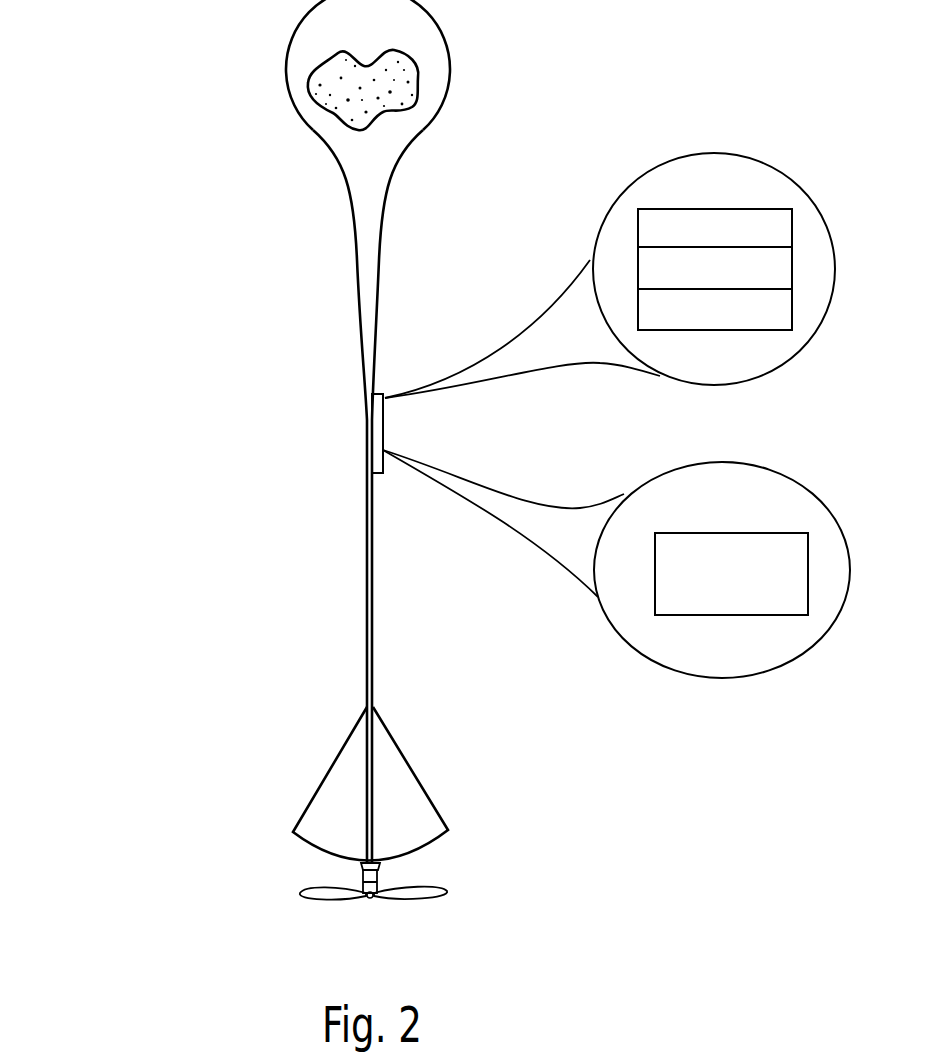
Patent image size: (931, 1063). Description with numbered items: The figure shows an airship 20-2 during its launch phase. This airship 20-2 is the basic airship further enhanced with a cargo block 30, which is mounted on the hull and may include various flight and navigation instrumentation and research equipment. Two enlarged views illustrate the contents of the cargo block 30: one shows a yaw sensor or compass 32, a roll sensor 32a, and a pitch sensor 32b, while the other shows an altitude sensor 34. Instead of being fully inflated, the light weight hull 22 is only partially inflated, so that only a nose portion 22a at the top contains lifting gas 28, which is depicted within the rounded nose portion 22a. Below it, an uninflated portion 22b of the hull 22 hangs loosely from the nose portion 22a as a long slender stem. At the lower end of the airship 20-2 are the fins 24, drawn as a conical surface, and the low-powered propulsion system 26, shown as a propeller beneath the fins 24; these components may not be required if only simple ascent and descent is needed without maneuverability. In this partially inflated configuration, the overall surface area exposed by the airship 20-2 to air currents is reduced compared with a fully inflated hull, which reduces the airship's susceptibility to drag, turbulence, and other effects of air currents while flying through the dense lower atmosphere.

The airship 20-2 is at (188, 210).
The hull 22 is at (332, 312).
The nose portion 22a is at (388, 37).
The uninflated portion 22b is at (364, 353).
The fins 24 is at (403, 770).
The propulsion system 26 is at (473, 871).
The lifting gas 28 is at (397, 88).
The cargo block 30 is at (384, 428).
The yaw (compass) sensor 32 is at (782, 212).
The roll sensor 32a is at (782, 267).
The pitch sensor 32b is at (773, 322).
The altitude sensor 34 is at (803, 574).